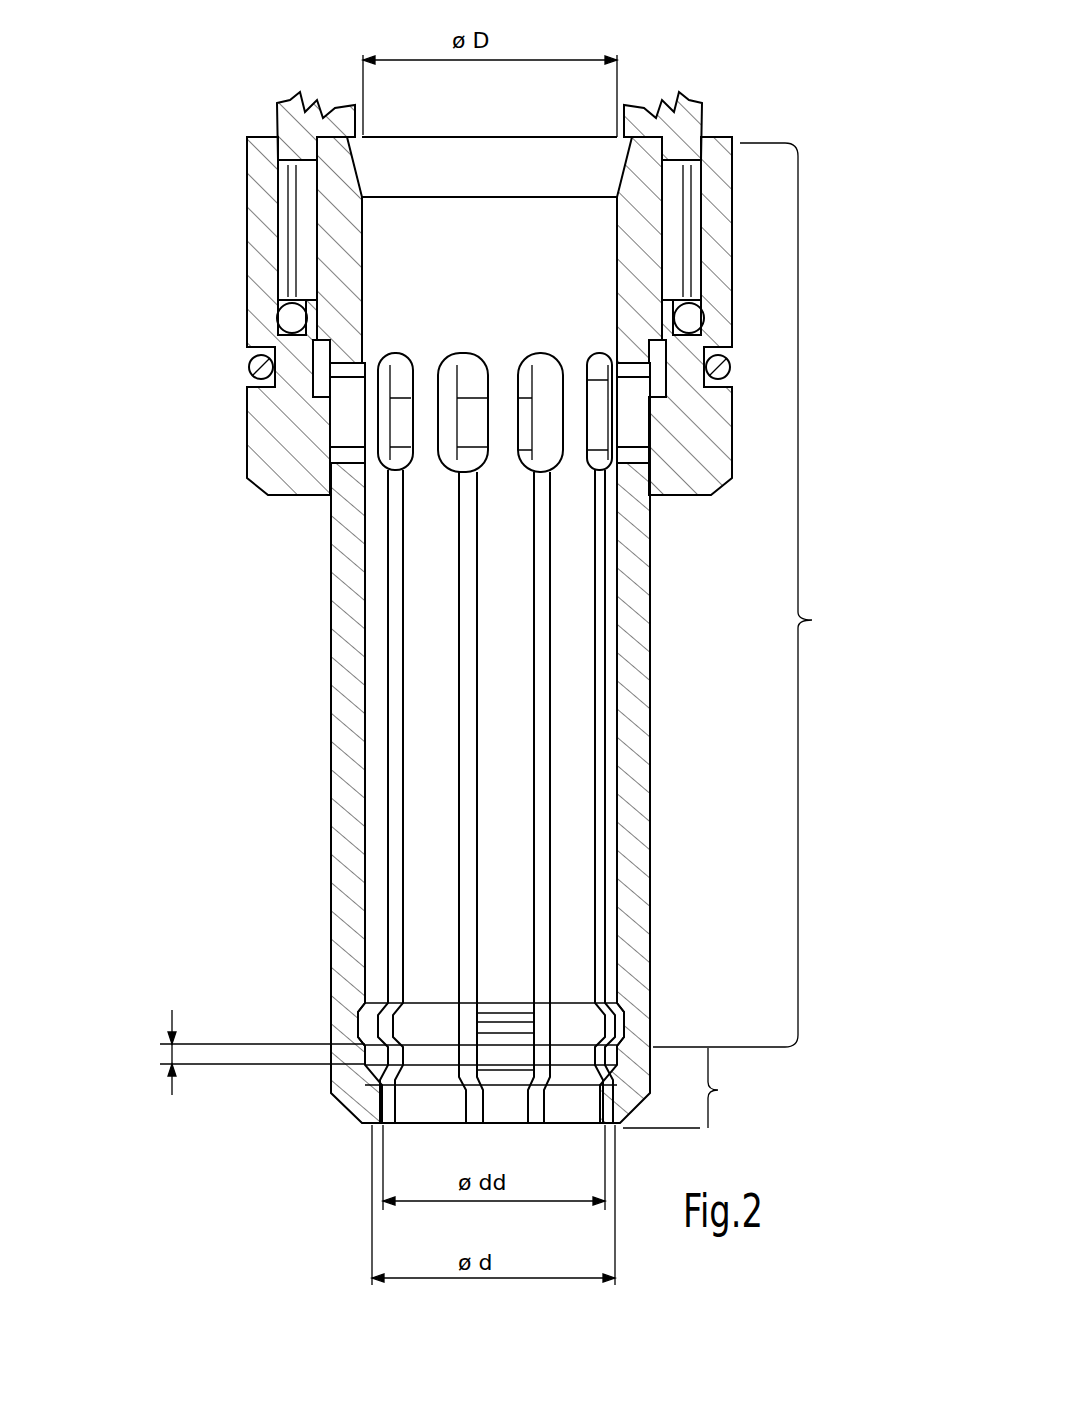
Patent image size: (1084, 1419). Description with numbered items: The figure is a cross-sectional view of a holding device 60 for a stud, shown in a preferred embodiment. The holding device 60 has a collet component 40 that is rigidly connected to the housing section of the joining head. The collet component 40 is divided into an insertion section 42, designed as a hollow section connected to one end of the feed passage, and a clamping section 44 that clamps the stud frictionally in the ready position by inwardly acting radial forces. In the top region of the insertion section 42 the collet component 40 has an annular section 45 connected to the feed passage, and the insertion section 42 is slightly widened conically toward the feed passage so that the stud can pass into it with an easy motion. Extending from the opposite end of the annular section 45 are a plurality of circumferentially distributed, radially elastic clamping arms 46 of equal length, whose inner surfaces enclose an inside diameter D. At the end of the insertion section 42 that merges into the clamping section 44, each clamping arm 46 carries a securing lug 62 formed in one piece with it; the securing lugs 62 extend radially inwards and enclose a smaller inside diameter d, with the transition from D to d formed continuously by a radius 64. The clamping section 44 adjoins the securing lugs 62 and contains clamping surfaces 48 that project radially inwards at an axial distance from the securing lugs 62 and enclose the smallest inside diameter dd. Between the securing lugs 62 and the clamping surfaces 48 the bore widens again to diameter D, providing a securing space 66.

The collet component 40 is at (461, 743).
The insertion section 42 is at (750, 595).
The clamping section 44 is at (686, 1088).
The annular section 45 is at (452, 253).
The clamping arms 46 is at (348, 878).
The clamping surfaces 48 is at (393, 1110).
The holding device 60 is at (810, 285).
The securing lug 62 is at (387, 1025).
The radius 64 is at (622, 1010).
The securing space 66 is at (245, 1052).